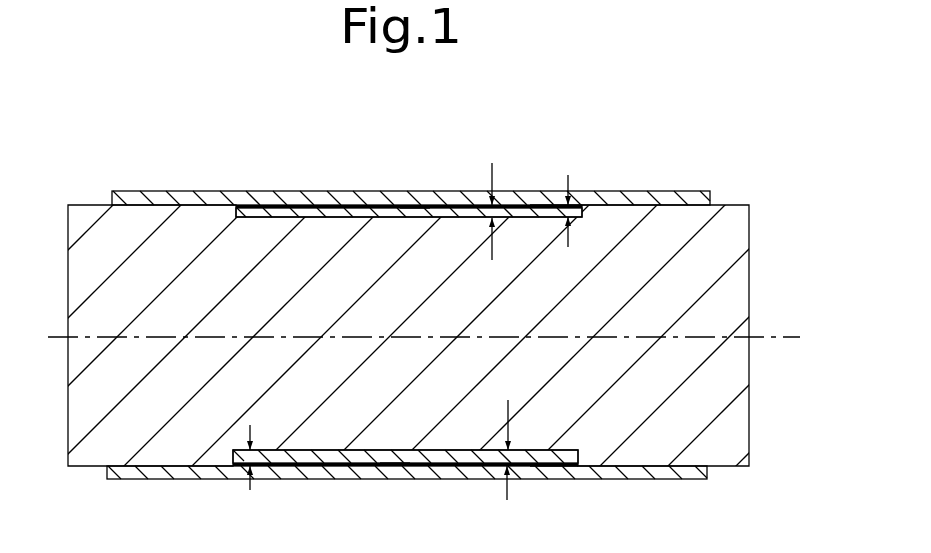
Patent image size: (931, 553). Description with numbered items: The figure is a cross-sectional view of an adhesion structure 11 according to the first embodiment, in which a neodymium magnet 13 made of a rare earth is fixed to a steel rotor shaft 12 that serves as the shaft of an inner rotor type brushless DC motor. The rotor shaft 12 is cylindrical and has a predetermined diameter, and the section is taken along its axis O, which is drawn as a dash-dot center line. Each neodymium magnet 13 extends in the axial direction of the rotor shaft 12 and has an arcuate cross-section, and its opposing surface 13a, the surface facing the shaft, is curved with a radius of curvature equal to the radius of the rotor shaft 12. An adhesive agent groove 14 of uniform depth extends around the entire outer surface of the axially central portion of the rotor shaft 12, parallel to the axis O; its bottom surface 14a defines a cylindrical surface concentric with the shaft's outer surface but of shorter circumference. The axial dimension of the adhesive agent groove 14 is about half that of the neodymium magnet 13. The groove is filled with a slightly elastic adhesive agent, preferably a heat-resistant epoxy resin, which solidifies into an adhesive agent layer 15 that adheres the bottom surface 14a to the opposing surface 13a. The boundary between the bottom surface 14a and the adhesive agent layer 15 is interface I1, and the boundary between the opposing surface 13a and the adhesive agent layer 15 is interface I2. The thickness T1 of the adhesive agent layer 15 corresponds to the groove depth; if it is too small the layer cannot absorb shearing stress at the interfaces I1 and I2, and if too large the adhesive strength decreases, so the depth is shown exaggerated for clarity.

The adhesion structure 11 is at (762, 160).
The rotor shaft 12 is at (86, 207).
The neodymium magnet 13 is at (203, 199).
The opposing surface 13a is at (547, 207).
The adhesive agent groove 14 is at (372, 204).
The bottom surface 14a is at (411, 212).
The adhesive agent layer 15 is at (463, 210).
The axis O is at (772, 337).
The thickness T1 is at (574, 195).
The interface I1 is at (498, 334).
The interface I2 is at (498, 333).